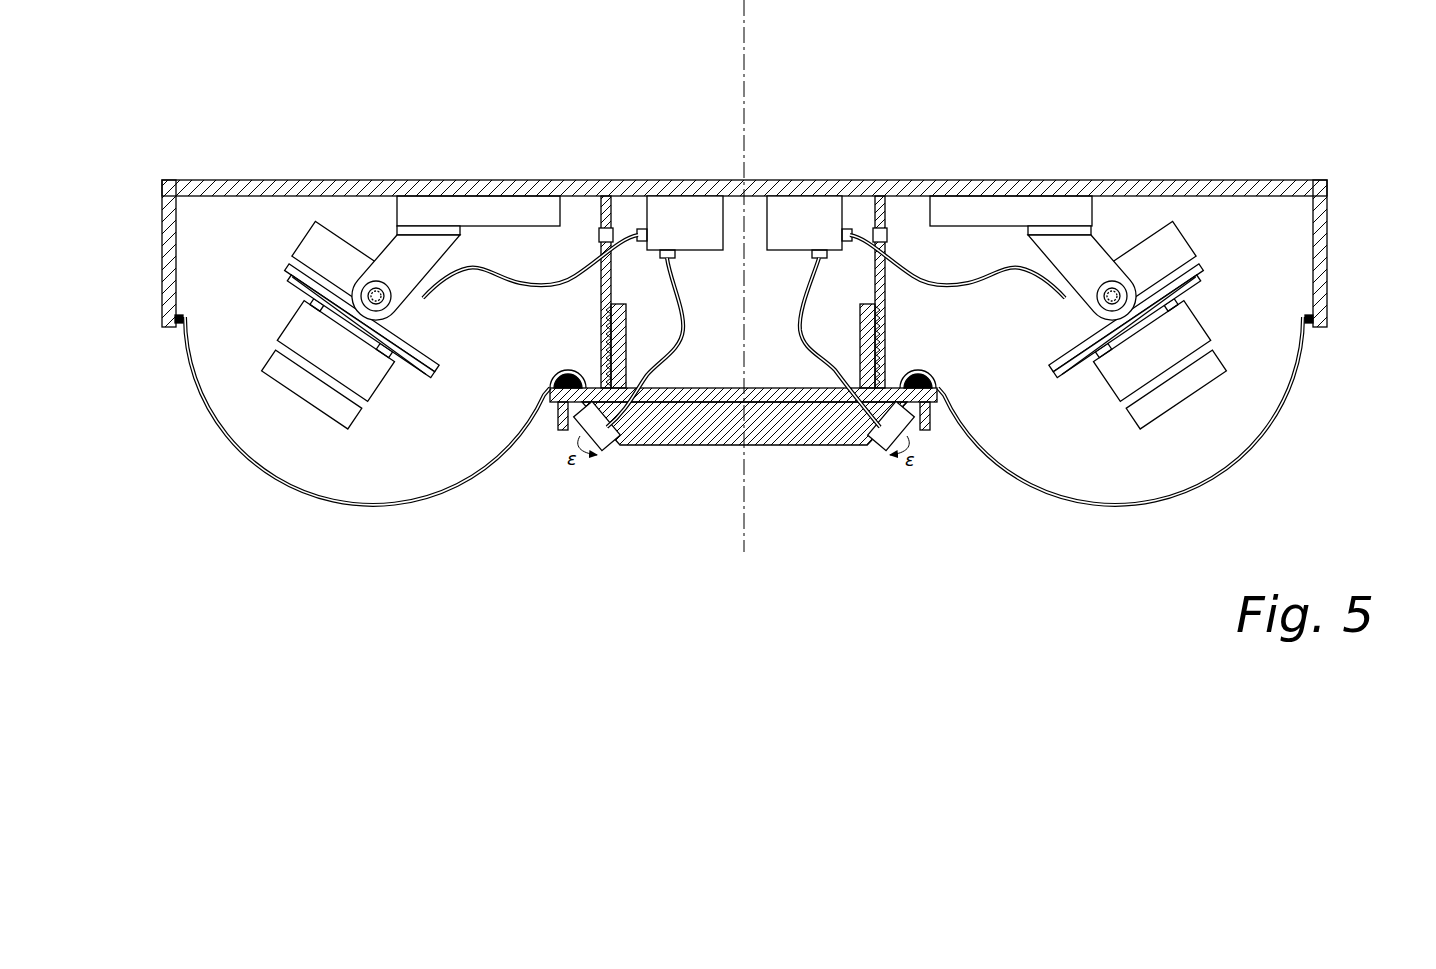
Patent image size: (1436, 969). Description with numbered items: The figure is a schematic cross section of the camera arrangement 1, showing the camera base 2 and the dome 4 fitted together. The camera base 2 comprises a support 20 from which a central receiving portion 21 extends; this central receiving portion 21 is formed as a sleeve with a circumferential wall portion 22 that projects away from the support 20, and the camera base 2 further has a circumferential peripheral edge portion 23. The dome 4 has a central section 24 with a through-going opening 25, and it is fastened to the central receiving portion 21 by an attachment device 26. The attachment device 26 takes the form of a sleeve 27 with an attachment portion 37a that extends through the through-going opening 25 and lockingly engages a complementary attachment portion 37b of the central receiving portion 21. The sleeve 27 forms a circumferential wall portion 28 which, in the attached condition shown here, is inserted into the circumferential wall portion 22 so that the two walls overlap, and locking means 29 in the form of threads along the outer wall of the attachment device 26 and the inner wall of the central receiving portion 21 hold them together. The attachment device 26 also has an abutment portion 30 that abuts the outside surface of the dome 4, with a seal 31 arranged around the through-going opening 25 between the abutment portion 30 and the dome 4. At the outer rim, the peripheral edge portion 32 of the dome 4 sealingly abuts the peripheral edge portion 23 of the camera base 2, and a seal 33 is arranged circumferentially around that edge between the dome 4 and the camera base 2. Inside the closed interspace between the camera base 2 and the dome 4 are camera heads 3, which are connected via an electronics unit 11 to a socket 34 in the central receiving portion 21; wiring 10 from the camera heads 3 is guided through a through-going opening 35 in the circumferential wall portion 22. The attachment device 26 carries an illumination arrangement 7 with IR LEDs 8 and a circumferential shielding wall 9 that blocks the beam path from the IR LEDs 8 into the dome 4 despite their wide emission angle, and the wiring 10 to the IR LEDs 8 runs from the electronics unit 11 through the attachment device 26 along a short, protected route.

The camera arrangement 1 is at (744, 102).
The camera base 2 is at (1353, 206).
The camera head 3 is at (1185, 326).
The dome 4 is at (1155, 460).
The illumination arrangement 7 is at (767, 445).
The IR LED 8 is at (874, 447).
The shielding wall 9 is at (928, 432).
The wiring 10 is at (1013, 264).
The electronics unit 11 is at (803, 202).
The support 20 is at (758, 192).
The central receiving portion 21 is at (744, 137).
The circumferential wall portion 22 is at (857, 194).
The peripheral edge portion 23 is at (1330, 286).
The central section 24 is at (840, 496).
The through-going opening 25 is at (857, 417).
The attachment device 26 is at (780, 332).
The sleeve 27 is at (867, 346).
The circumferential wall portion 28 is at (862, 348).
The locking means 29 is at (886, 366).
The abutment portion 30 is at (982, 450).
The seal 31 is at (933, 407).
The peripheral edge portion 32 is at (1303, 352).
The seal 33 is at (1327, 323).
The socket 34 is at (826, 197).
The through-going opening 35 is at (930, 259).
The attachment portion 37a is at (951, 346).
The complementary attachment portion 37b is at (882, 336).